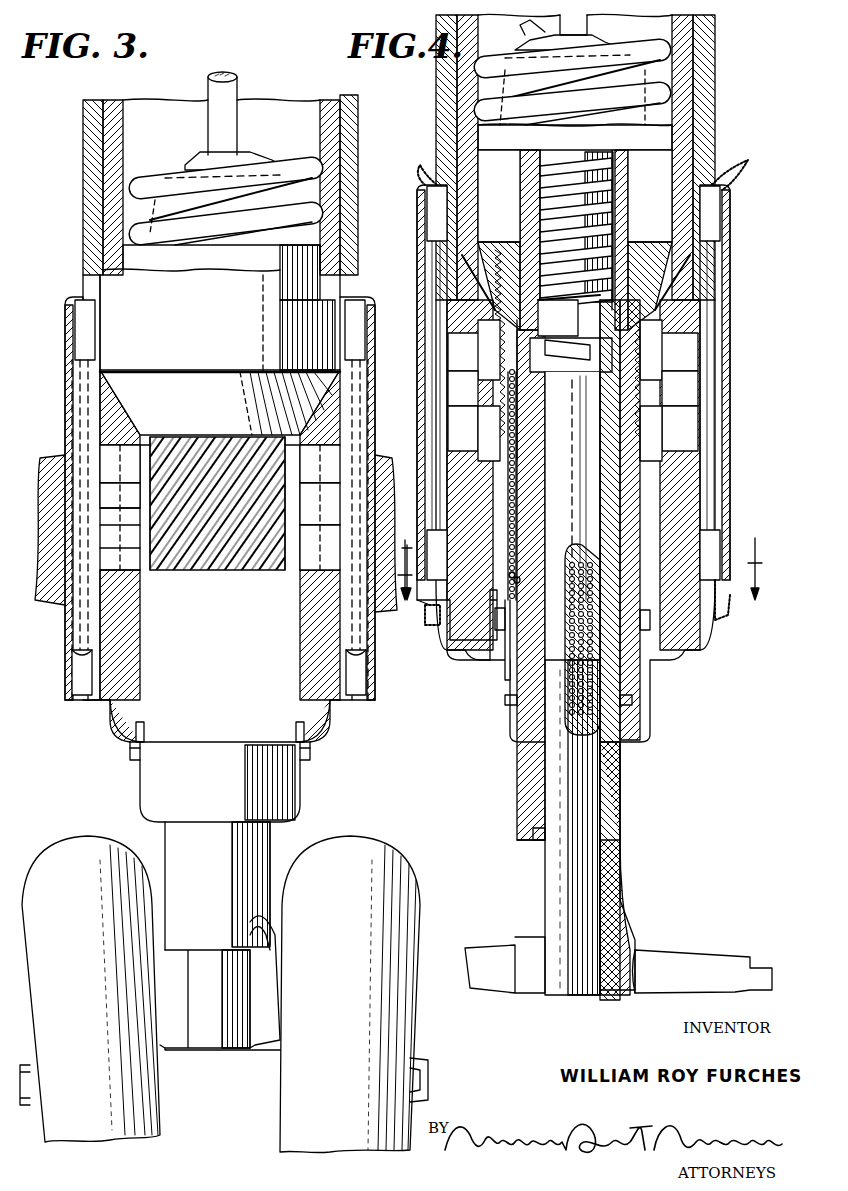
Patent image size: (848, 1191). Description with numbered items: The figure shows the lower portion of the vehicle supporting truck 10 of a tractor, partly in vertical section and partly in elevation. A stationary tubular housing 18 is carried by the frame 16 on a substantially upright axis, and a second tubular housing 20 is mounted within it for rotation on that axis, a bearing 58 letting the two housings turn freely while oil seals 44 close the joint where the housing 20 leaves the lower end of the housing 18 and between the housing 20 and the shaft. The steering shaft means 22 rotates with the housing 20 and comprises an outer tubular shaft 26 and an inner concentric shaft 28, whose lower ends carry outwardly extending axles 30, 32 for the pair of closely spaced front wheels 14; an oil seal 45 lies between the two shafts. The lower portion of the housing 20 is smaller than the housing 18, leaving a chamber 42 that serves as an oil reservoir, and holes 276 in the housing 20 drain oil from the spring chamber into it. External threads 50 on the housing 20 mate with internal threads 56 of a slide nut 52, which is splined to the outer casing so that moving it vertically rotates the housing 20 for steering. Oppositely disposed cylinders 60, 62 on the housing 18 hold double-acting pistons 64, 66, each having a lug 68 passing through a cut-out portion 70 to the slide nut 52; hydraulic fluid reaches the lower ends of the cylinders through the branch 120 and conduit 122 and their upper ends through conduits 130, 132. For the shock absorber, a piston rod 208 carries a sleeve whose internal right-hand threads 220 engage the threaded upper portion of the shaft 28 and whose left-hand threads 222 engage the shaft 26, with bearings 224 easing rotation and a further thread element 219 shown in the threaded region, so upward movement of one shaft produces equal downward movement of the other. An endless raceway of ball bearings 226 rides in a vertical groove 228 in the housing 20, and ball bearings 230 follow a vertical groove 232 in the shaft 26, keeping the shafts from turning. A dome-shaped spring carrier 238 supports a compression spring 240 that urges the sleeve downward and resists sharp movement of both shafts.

In FIG. 3, the truck 10 is at (400, 569).
In FIG. 4, the truck 10 is at (589, 569).
In FIG. 3, the front wheels 14 is at (70, 846).
In FIG. 3, the frame 16 is at (50, 462).
In FIG. 3, the stationary tubular housing 18 is at (358, 108).
In FIG. 4, the stationary tubular housing 18 is at (715, 76).
In FIG. 3, the second tubular housing 20 is at (320, 126).
In FIG. 4, the second tubular housing 20 is at (715, 138).
In FIG. 4, the steering shaft means 22 is at (638, 832).
In FIG. 3, the outer tubular shaft 26 is at (270, 852).
In FIG. 4, the outer tubular shaft 26 is at (625, 182).
In FIG. 3, the inner concentric shaft 28 is at (188, 974).
In FIG. 4, the inner concentric shaft 28 is at (545, 878).
In FIG. 3, the axle 30 is at (418, 1074).
In FIG. 4, the axle 30 is at (670, 955).
In FIG. 3, the axle 32 is at (28, 1074).
In FIG. 4, the axle 32 is at (485, 945).
In FIG. 3, the chamber 42 is at (140, 538).
In FIG. 4, the chamber 42 is at (485, 418).
In FIG. 3, the oil seals 44 is at (300, 765).
In FIG. 4, the oil seals 44 is at (648, 665).
In FIG. 4, the oil seal 45 is at (540, 840).
In FIG. 3, the external threads 50 is at (150, 556).
In FIG. 3, the slide nut 52 is at (300, 486).
In FIG. 4, the slide nut 52 is at (665, 418).
In FIG. 3, the internal threads 56 is at (150, 498).
In FIG. 3, the bearing 58 is at (300, 735).
In FIG. 4, the bearing 58 is at (660, 642).
In FIG. 3, the cylinder 60 is at (372, 348).
In FIG. 4, the cylinder 60 is at (730, 222).
In FIG. 3, the cylinder 62 is at (68, 325).
In FIG. 4, the cylinder 62 is at (426, 253).
In FIG. 3, the double-acting piston 64 is at (365, 658).
In FIG. 4, the double-acting piston 64 is at (715, 238).
In FIG. 3, the double-acting piston 66 is at (72, 656).
In FIG. 4, the double-acting piston 66 is at (420, 460).
In FIG. 3, the lug 68 is at (118, 488).
In FIG. 4, the lug 68 is at (460, 372).
In FIG. 3, the cut-out portion 70 is at (100, 558).
In FIG. 4, the cut-out portion 70 is at (460, 450).
In FIG. 4, the branch of the Y-fitting 120 is at (718, 625).
In FIG. 4, the conduit 122 is at (427, 622).
In FIG. 4, the conduit 130 is at (742, 170).
In FIG. 4, the conduit 132 is at (425, 172).
In FIG. 3, the piston rod 208 is at (208, 118).
In FIG. 4, the piston rod 208 is at (530, 32).
In FIG. 4, the thread 219 is at (605, 192).
In FIG. 4, the internal right-hand threads 220 is at (563, 362).
In FIG. 4, the left-hand threads 222 is at (569, 315).
In FIG. 4, the bearings 224 is at (612, 172).
In FIG. 4, the endless raceway of ball bearings 226 is at (508, 588).
In FIG. 4, the vertical groove 228 is at (505, 280).
In FIG. 4, the endless raceway of ball bearings 230 is at (600, 733).
In FIG. 4, the vertical groove 232 is at (608, 485).
In FIG. 3, the dome-shaped spring carrier 238 is at (150, 200).
In FIG. 4, the dome-shaped spring carrier 238 is at (680, 118).
In FIG. 3, the compression spring 240 is at (250, 150).
In FIG. 4, the compression spring 240 is at (700, 36).
In FIG. 3, the holes 276 is at (228, 396).
In FIG. 4, the holes 276 is at (462, 255).